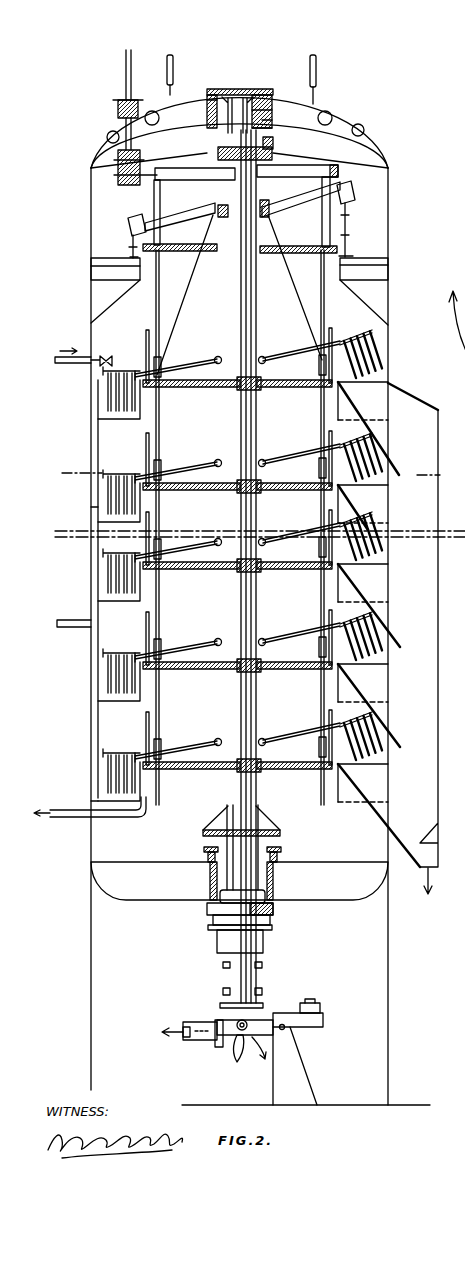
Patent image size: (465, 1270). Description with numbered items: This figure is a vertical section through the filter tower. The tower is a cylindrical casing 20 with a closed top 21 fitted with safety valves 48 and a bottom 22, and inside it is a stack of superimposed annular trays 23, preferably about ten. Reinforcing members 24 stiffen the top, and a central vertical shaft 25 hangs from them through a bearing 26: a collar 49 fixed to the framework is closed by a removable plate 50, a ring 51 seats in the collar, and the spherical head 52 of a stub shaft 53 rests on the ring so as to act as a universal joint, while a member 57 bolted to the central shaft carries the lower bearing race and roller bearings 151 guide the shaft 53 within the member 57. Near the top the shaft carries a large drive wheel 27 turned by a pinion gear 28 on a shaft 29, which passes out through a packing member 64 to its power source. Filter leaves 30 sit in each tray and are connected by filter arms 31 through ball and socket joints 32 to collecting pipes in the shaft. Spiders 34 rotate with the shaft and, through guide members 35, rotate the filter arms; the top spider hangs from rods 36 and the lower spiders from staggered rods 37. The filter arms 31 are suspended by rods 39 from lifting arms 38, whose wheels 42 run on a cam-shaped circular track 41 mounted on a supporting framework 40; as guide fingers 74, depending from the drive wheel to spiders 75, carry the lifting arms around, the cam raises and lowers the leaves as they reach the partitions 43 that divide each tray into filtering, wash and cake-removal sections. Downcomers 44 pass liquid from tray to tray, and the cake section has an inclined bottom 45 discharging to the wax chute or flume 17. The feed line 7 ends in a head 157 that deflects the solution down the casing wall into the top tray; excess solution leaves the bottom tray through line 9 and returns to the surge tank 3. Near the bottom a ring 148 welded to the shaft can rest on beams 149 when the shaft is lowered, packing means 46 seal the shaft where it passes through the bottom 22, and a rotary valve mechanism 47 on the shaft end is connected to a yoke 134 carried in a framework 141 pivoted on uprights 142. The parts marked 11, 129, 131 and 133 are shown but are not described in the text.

The surge tank 3 is at (251, 467).
The line 7 is at (71, 364).
The line 9 is at (80, 814).
The inlet pipe 11 is at (73, 621).
The wax chute or flume 17 is at (440, 513).
The cylindrical casing 20 is at (91, 226).
The closed top 21 is at (353, 118).
The bottom 22 is at (313, 903).
The annular trays 23 is at (112, 420).
The reinforcing members 24 is at (305, 128).
The central vertical shaft 25 is at (256, 312).
The bearing 26 is at (272, 117).
The drive wheel 27 is at (162, 167).
The pinion gear 28 is at (115, 166).
The shaft 29 is at (126, 67).
The filter leaves 30 is at (380, 349).
The filter arms 31 is at (187, 364).
The ball and socket joints 32 is at (217, 357).
The spiders 34 is at (188, 388).
The guide members 35 is at (146, 348).
The rods 36 is at (187, 279).
The staggered rods 37 is at (155, 430).
The lifting arms 38 is at (190, 214).
The rods 39 is at (158, 278).
The supporting framework 40 is at (110, 260).
The circular track 41 is at (133, 248).
The wheels 42 is at (132, 220).
The partitions 43 is at (454, 287).
The downcomers 44 is at (98, 454).
The inclined bottom 45 is at (353, 405).
The packing means 46 is at (270, 930).
The rotary valve mechanism 47 is at (223, 1044).
The safety valves 48 is at (168, 72).
The collar 49 is at (207, 107).
The removable plate 50 is at (264, 90).
The ring 51 is at (268, 110).
The head 52 is at (243, 98).
The shaft 53 is at (233, 120).
The member 57 is at (266, 142).
The packing member 64 is at (118, 112).
The guide fingers 74 is at (157, 195).
The spiders 75 is at (293, 247).
The coupling 129 is at (202, 1042).
The drive shaft 131 is at (183, 1025).
The blade 133 is at (254, 1055).
The yoke 134 is at (264, 1022).
The framework 141 is at (308, 1029).
The uprights 142 is at (307, 1070).
The ring 148 is at (280, 832).
The beams 149 is at (281, 852).
The roller bearings 151 is at (222, 100).
The head 157 is at (108, 357).